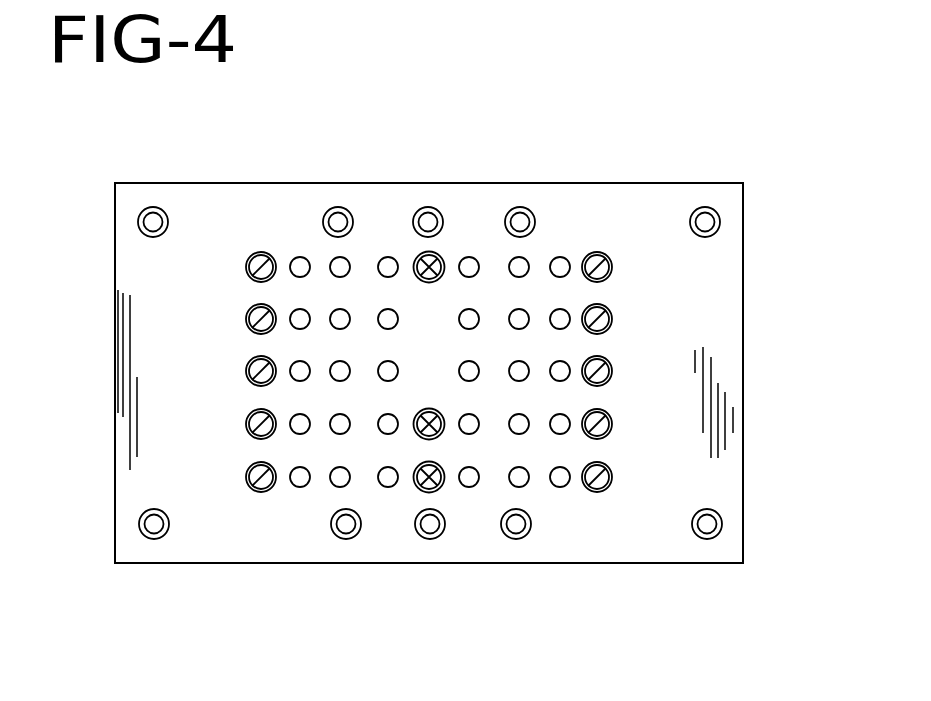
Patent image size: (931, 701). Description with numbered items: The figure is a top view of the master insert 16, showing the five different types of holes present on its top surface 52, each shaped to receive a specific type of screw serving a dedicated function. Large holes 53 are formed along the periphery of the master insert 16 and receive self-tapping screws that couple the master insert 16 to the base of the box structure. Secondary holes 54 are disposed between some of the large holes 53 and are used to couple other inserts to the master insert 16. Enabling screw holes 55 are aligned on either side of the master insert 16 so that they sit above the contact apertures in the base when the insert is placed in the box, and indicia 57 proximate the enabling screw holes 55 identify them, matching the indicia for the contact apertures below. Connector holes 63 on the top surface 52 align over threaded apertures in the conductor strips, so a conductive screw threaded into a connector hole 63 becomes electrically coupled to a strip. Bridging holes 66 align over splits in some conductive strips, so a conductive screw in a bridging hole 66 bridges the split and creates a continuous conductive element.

The master insert 16 is at (745, 432).
The top surface 52 is at (240, 522).
The large holes 53 is at (153, 222).
The secondary holes 54 is at (338, 222).
The enabling screw holes 55 is at (250, 267).
The indicia 57 is at (605, 424).
The connector holes 63 is at (520, 487).
The bridging holes 66 is at (440, 258).